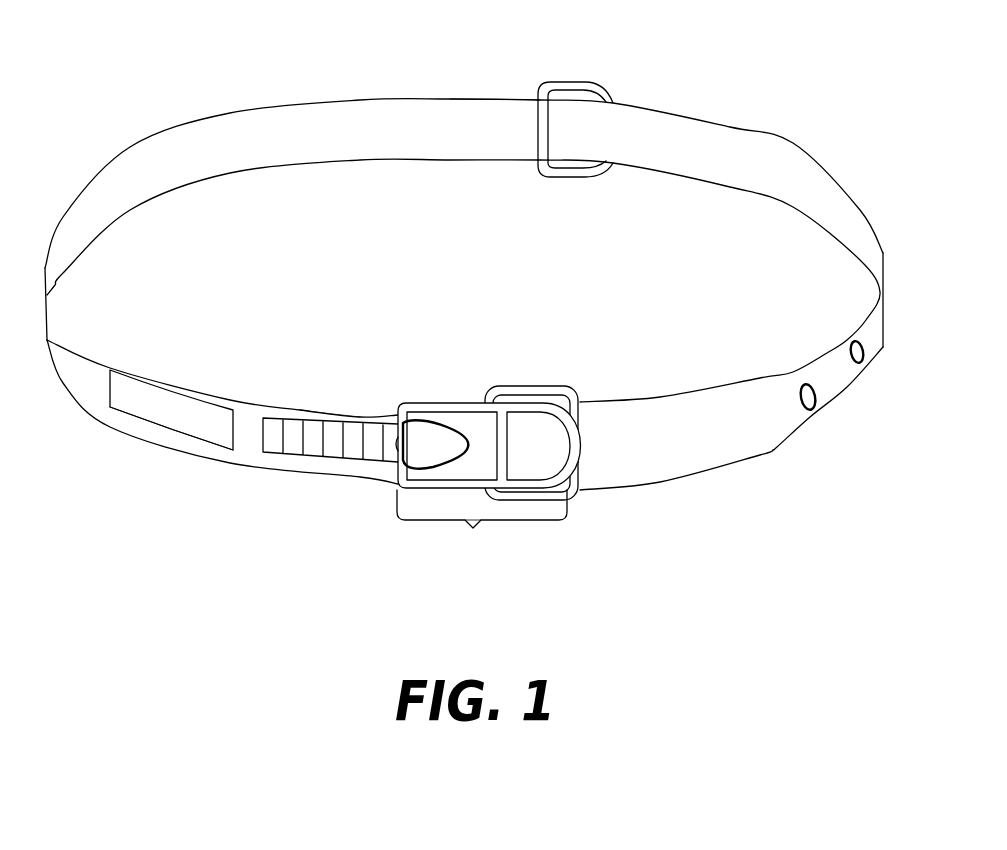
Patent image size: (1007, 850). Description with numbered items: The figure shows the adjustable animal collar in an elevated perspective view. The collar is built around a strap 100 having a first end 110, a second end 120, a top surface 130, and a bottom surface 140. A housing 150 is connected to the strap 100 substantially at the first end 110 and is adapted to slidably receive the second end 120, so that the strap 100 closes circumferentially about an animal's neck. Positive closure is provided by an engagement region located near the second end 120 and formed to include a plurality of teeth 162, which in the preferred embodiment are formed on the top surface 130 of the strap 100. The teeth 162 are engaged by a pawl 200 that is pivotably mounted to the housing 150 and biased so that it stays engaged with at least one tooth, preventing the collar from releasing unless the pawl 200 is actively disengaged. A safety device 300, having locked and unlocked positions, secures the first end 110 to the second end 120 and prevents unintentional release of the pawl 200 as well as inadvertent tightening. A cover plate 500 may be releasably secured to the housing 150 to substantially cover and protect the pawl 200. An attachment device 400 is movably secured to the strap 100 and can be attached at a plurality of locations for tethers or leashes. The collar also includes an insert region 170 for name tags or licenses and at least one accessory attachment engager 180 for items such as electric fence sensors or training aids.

The strap 100 is at (464, 294).
The first end 110 is at (427, 412).
The second end 120 is at (373, 415).
The top surface 130 is at (258, 408).
The bottom surface 140 is at (462, 160).
The housing 150 is at (475, 533).
The teeth 162 is at (335, 445).
The insert region 170 is at (147, 422).
The accessory attachment engager 180 is at (852, 357).
The pawl 200 is at (407, 467).
The safety device 300 is at (520, 417).
The attachment device 400 is at (587, 83).
The cover plate 500 is at (393, 455).